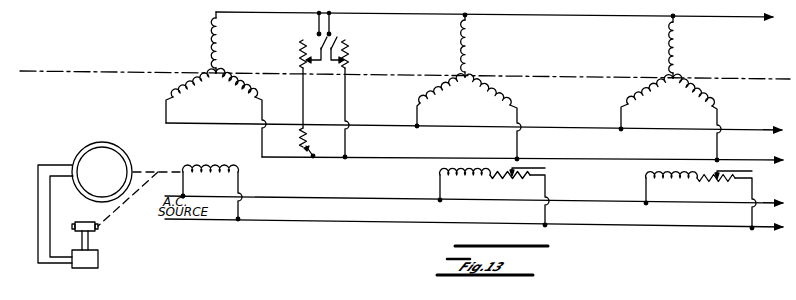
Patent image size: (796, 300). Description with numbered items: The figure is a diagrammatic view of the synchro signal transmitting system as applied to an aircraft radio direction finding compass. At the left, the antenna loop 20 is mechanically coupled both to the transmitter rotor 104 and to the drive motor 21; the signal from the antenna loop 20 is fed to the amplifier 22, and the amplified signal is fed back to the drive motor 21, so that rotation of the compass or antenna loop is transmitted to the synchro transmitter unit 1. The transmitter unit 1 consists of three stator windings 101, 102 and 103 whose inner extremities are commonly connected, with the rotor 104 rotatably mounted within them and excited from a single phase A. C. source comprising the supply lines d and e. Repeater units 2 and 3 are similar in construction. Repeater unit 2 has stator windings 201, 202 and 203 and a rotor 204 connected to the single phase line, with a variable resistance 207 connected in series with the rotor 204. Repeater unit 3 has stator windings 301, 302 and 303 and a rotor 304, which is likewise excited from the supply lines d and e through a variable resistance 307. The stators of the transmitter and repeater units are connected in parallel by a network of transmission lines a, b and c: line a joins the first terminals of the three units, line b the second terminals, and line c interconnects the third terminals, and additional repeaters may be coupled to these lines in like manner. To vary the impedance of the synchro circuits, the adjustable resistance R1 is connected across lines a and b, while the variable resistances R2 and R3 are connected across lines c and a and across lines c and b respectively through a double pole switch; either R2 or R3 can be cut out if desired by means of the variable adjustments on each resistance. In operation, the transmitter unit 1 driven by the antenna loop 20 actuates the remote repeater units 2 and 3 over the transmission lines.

The transmitter unit 1 is at (209, 84).
The repeater unit 2 is at (478, 87).
The repeater unit 3 is at (682, 88).
The stator winding 101 is at (177, 95).
The stator winding 102 is at (249, 97).
The stator winding 103 is at (220, 46).
The rotor 104 is at (211, 183).
The stator winding 201 is at (432, 103).
The stator winding 202 is at (509, 100).
The stator winding 203 is at (469, 47).
The rotor 204 is at (464, 184).
The variable resistance 207 is at (522, 177).
The stator winding 301 is at (634, 106).
The stator winding 302 is at (710, 102).
The stator winding 303 is at (679, 48).
The rotor 304 is at (670, 188).
The variable resistance 307 is at (730, 180).
The antenna loop 20 is at (128, 152).
The drive motor 21 is at (82, 222).
The amplifier 22 is at (98, 262).
The adjustable resistance R1 is at (296, 143).
The variable resistance R2 is at (292, 84).
The variable resistance R3 is at (360, 99).
The transmission line a is at (385, 126).
The transmission line b is at (385, 156).
The transmission line c is at (398, 14).
The supply line d is at (343, 198).
The supply line e is at (343, 220).